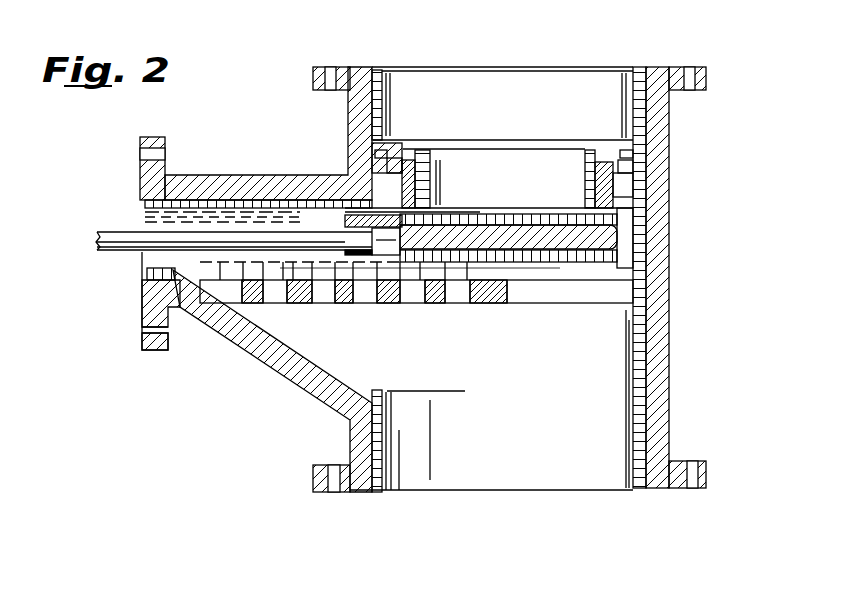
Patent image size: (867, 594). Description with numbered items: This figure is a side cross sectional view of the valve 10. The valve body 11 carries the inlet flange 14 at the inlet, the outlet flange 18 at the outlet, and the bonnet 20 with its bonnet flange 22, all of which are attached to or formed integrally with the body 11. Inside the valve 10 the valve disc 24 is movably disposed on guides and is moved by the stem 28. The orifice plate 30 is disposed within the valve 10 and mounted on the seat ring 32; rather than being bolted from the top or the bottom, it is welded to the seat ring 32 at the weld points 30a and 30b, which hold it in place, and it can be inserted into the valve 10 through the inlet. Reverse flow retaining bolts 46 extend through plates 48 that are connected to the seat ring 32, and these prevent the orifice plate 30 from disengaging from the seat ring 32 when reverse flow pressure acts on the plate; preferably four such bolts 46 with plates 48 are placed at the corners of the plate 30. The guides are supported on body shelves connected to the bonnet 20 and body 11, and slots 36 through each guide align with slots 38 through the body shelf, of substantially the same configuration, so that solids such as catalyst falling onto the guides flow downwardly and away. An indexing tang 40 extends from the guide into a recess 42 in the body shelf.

The valve 10 is at (683, 222).
The valve body 11 is at (655, 380).
The inlet flange 14 is at (672, 68).
The outlet flange 18 is at (672, 482).
The bonnet 20 is at (188, 172).
The bonnet flange 22 is at (145, 170).
The valve disc 24 is at (632, 300).
The stem 28 is at (113, 257).
The orifice plate 30 is at (633, 182).
The weld point 30a is at (645, 222).
The weld point 30b is at (348, 195).
The seat ring 32 is at (605, 188).
The slots 36 is at (228, 292).
The slots 38 is at (270, 305).
The indexing tang 40 is at (367, 307).
The recess 42 is at (318, 383).
The reverse flow retaining bolts 46 is at (380, 166).
The plates 48 is at (400, 160).